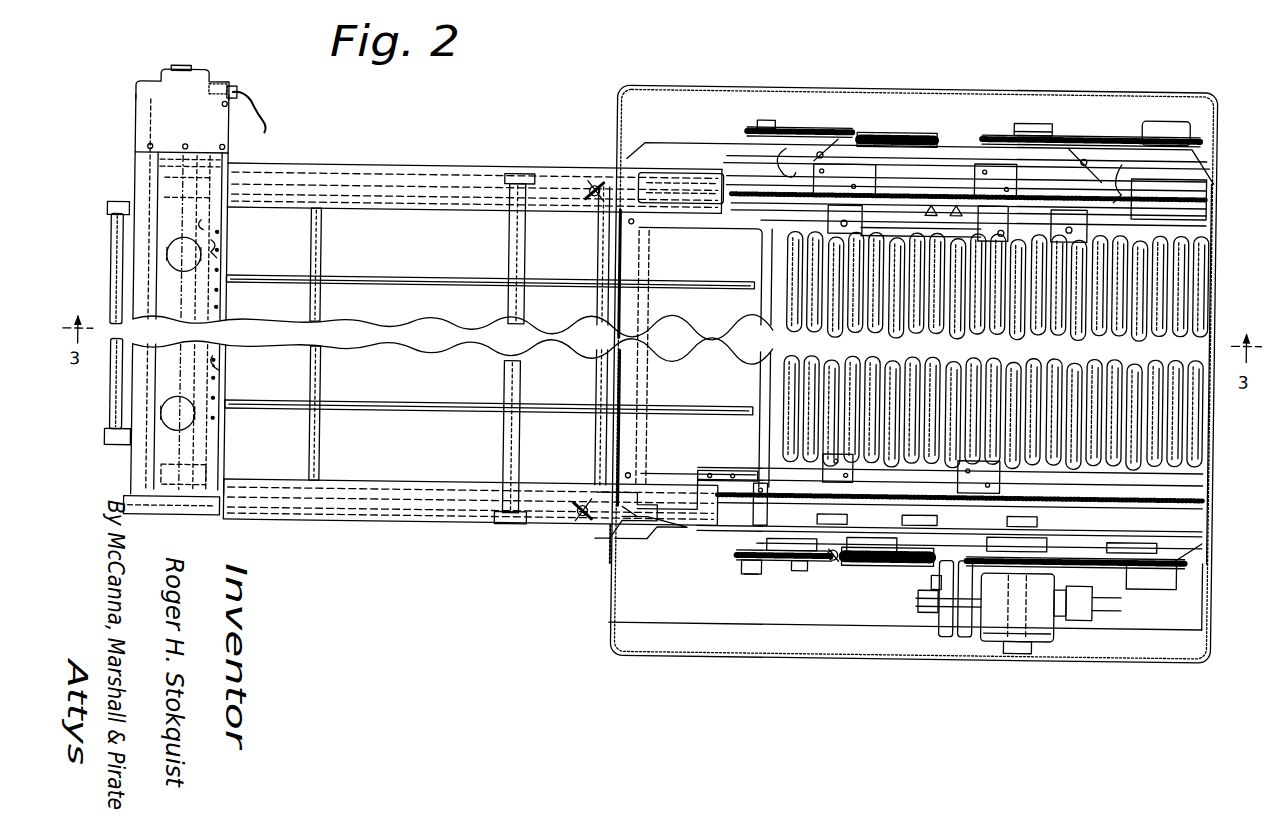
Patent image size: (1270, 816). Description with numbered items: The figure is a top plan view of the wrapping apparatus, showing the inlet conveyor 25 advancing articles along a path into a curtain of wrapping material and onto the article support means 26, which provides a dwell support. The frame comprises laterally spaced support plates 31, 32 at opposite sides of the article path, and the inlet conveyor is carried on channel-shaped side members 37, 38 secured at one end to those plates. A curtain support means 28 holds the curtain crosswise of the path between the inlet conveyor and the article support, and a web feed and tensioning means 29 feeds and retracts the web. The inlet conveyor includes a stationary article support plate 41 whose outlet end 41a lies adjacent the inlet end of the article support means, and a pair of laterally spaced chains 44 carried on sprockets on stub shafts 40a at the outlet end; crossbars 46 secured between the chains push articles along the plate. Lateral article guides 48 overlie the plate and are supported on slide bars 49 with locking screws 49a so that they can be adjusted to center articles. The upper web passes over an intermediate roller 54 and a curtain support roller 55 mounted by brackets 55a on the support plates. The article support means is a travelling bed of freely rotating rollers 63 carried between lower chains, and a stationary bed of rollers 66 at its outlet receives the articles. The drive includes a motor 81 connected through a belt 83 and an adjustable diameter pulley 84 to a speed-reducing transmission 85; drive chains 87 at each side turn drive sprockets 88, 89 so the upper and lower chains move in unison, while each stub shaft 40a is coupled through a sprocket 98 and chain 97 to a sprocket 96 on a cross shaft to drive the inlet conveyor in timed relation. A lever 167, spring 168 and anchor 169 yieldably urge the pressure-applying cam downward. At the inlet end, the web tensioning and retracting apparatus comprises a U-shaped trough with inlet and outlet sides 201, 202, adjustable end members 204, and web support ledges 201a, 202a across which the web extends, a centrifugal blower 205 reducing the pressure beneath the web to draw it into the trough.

The inlet conveyor 25 is at (361, 158).
The article support means 26 is at (784, 304).
The curtain support means 28 is at (505, 238).
The web feed and tensioning means 29 is at (124, 195).
The support plate 31 is at (870, 556).
The support plate 32 is at (728, 160).
The side member 37 is at (409, 515).
The side member 38 is at (410, 163).
The stub shaft 40a is at (748, 568).
The article support plate 41 is at (422, 448).
The outlet end 41a is at (762, 442).
The chains 44 is at (246, 195).
The crossbars 46 is at (312, 440).
The lateral article guides 48 is at (426, 282).
The slide bars 49 is at (595, 244).
The locking screws 49a is at (591, 517).
The intermediate roller 54 is at (110, 250).
The curtain support roller 55 is at (507, 439).
The brackets 55a is at (548, 522).
The rollers 63 is at (784, 376).
The stationary bed of rollers 66 is at (1215, 270).
The motor 81 is at (1086, 612).
The belt 83 is at (948, 582).
The adjustable diameter pulley 84 is at (942, 632).
The transmission 85 is at (1044, 624).
The drive chains 87 is at (1092, 135).
The drive sprocket 88 is at (1152, 125).
The drive sprocket 89 is at (1050, 125).
The sprocket 96 is at (824, 132).
The chain 97 is at (790, 128).
The sprocket 98 is at (760, 122).
The lever 167 is at (830, 560).
The spring 168 is at (886, 560).
The anchor 169 is at (936, 566).
The inlet side 201 is at (162, 372).
The web support ledge 201a is at (150, 185).
The outlet side 202 is at (205, 223).
The web support ledge 202a is at (222, 362).
The end members 204 is at (207, 246).
The centrifugal blower 205 is at (150, 110).